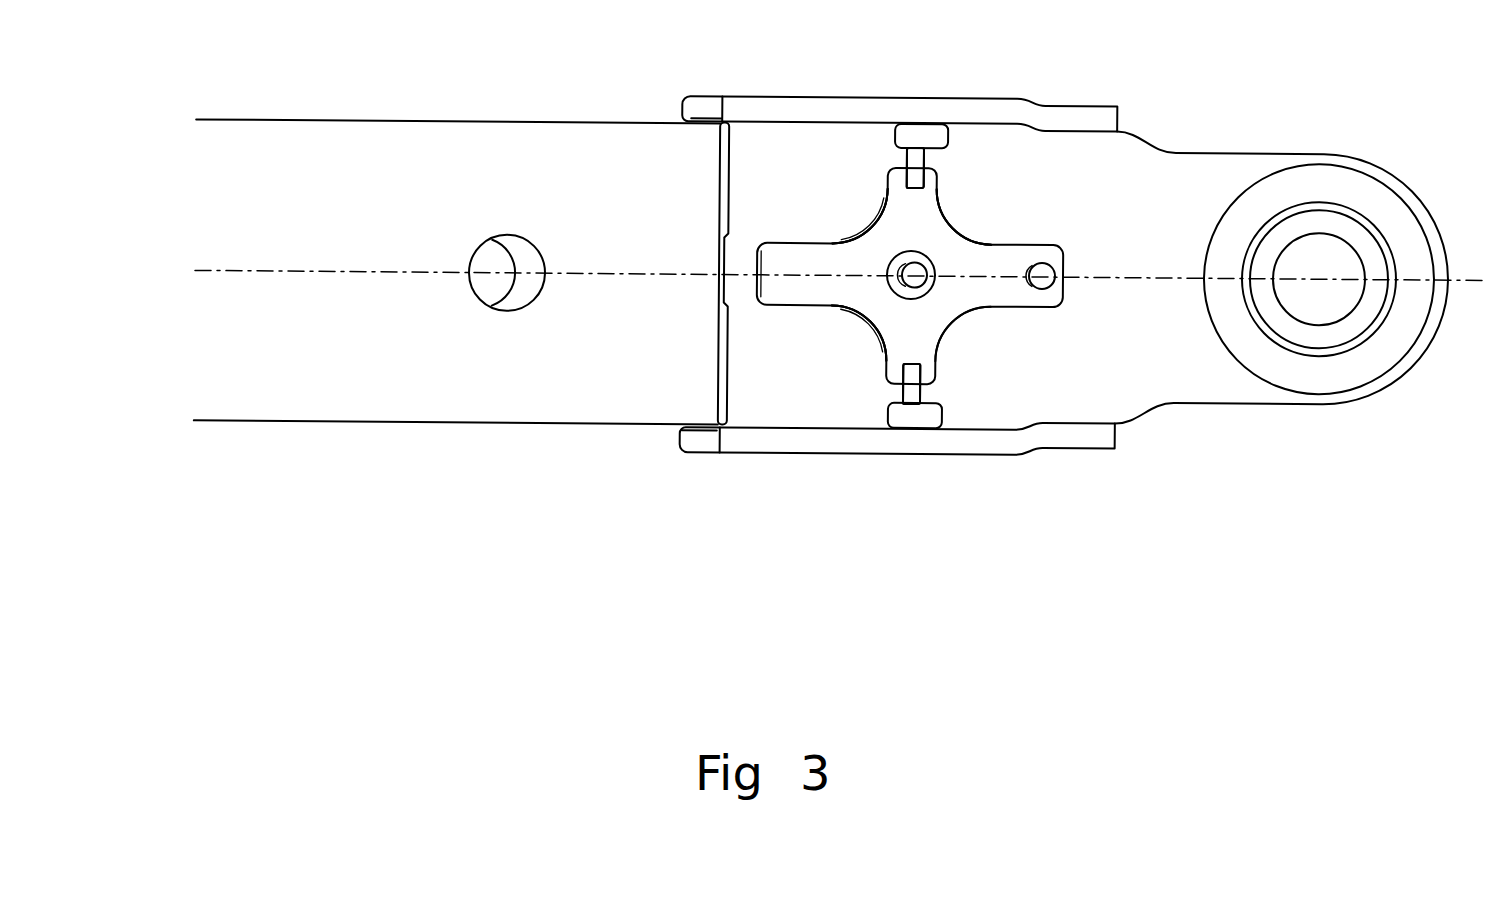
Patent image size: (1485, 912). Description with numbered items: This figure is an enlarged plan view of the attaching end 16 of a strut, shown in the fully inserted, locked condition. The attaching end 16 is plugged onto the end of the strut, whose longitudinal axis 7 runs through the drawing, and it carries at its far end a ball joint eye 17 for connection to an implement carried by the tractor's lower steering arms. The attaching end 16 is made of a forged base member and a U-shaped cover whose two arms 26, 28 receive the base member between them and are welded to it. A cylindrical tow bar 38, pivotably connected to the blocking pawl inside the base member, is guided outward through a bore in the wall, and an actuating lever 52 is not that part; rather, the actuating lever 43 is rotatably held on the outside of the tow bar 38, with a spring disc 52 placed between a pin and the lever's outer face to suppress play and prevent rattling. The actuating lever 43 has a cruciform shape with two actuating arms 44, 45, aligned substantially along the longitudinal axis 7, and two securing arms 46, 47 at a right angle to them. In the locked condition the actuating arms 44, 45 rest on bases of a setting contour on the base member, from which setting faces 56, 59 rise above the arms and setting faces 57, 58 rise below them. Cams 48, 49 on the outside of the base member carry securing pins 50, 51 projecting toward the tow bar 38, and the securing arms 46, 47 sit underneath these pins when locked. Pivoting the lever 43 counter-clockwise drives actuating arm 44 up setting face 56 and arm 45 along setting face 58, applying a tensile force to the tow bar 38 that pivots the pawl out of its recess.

The longitudinal axis 7 is at (335, 270).
The attaching end 16 is at (1078, 482).
The ball joint eye 17 is at (1355, 345).
The arm 26 is at (768, 440).
The arm 28 is at (778, 110).
The tow bar 38 is at (912, 268).
The actuating lever 43 is at (891, 265).
The actuating arm 44 is at (1023, 292).
The actuating arm 45 is at (788, 262).
The securing arm 46 is at (927, 217).
The securing arm 47 is at (872, 350).
The cam 48 is at (920, 137).
The cam 49 is at (912, 415).
The securing pin 50 is at (915, 175).
The securing pin 51 is at (910, 375).
The spring disc 52 is at (822, 294).
The setting face 56 is at (986, 192).
The setting face 57 is at (975, 353).
The setting face 58 is at (833, 354).
The setting face 59 is at (835, 190).